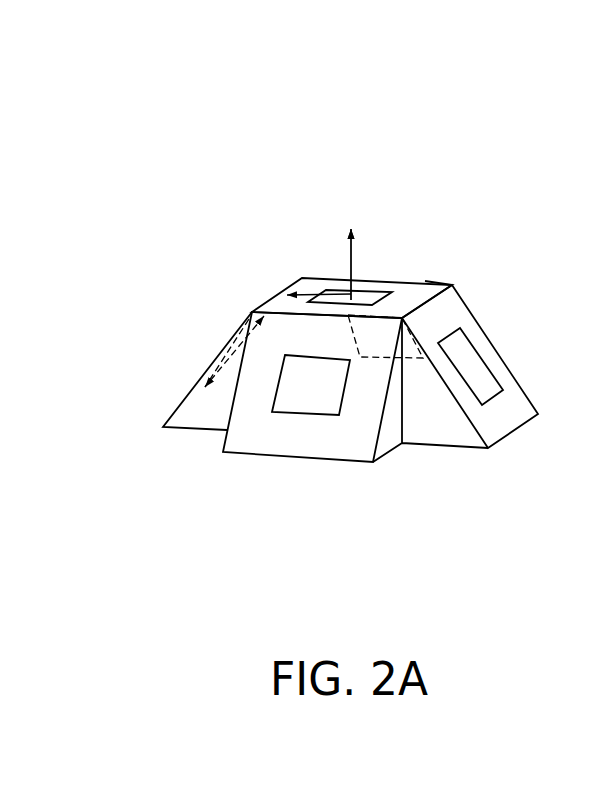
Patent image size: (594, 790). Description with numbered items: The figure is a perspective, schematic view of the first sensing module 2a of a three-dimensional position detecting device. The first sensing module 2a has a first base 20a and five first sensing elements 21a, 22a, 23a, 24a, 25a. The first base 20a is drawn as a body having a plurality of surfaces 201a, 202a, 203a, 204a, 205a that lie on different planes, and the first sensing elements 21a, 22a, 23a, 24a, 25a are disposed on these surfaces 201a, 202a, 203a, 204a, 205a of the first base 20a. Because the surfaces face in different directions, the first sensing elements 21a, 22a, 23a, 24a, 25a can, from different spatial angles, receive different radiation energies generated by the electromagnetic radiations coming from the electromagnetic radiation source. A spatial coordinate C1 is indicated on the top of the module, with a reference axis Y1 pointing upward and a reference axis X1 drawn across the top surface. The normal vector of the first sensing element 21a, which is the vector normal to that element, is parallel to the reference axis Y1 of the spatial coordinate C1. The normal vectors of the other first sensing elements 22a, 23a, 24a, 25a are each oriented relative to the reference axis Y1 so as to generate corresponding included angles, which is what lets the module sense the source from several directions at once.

The first sensing module 2a is at (110, 80).
The first base 20a is at (463, 295).
The surface 201a is at (417, 297).
The surface 202a is at (192, 390).
The surface 203a is at (355, 423).
The surface 204a is at (500, 417).
The surface 205a is at (433, 285).
The first sensing element 21a is at (372, 293).
The first sensing element 22a is at (233, 343).
The first sensing element 23a is at (307, 392).
The first sensing element 24a is at (468, 360).
The first sensing element 25a is at (380, 343).
The spatial coordinate C1 is at (350, 262).
The reference axis X1 is at (305, 280).
The reference axis Y1 is at (369, 258).